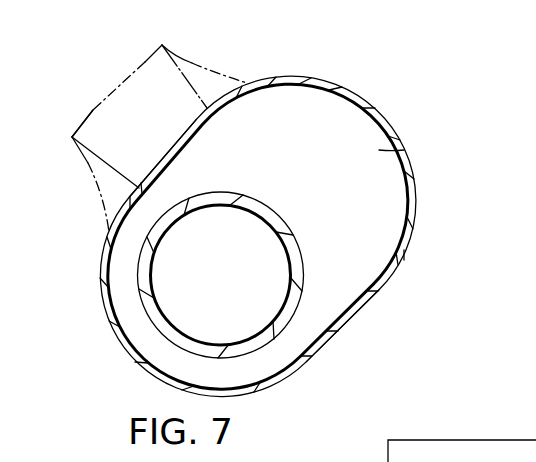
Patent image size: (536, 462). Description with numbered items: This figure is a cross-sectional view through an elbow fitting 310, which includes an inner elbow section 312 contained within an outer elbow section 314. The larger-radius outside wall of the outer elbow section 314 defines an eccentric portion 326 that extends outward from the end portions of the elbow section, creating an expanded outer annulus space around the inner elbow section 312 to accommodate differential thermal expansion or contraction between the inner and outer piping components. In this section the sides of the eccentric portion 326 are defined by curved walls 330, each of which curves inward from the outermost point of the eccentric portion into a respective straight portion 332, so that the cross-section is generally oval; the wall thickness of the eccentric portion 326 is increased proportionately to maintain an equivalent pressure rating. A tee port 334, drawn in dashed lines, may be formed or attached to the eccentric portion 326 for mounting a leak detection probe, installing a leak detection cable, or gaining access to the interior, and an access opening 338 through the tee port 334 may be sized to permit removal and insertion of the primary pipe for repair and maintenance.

The elbow fitting 310 is at (388, 105).
The inner elbow section 312 is at (298, 235).
The outer elbow section 314 is at (346, 326).
The eccentric portion 326 is at (428, 146).
The curved walls 330 is at (404, 254).
The straight portion 332 is at (167, 157).
The tee port 334 is at (192, 63).
The access opening 338 is at (97, 138).